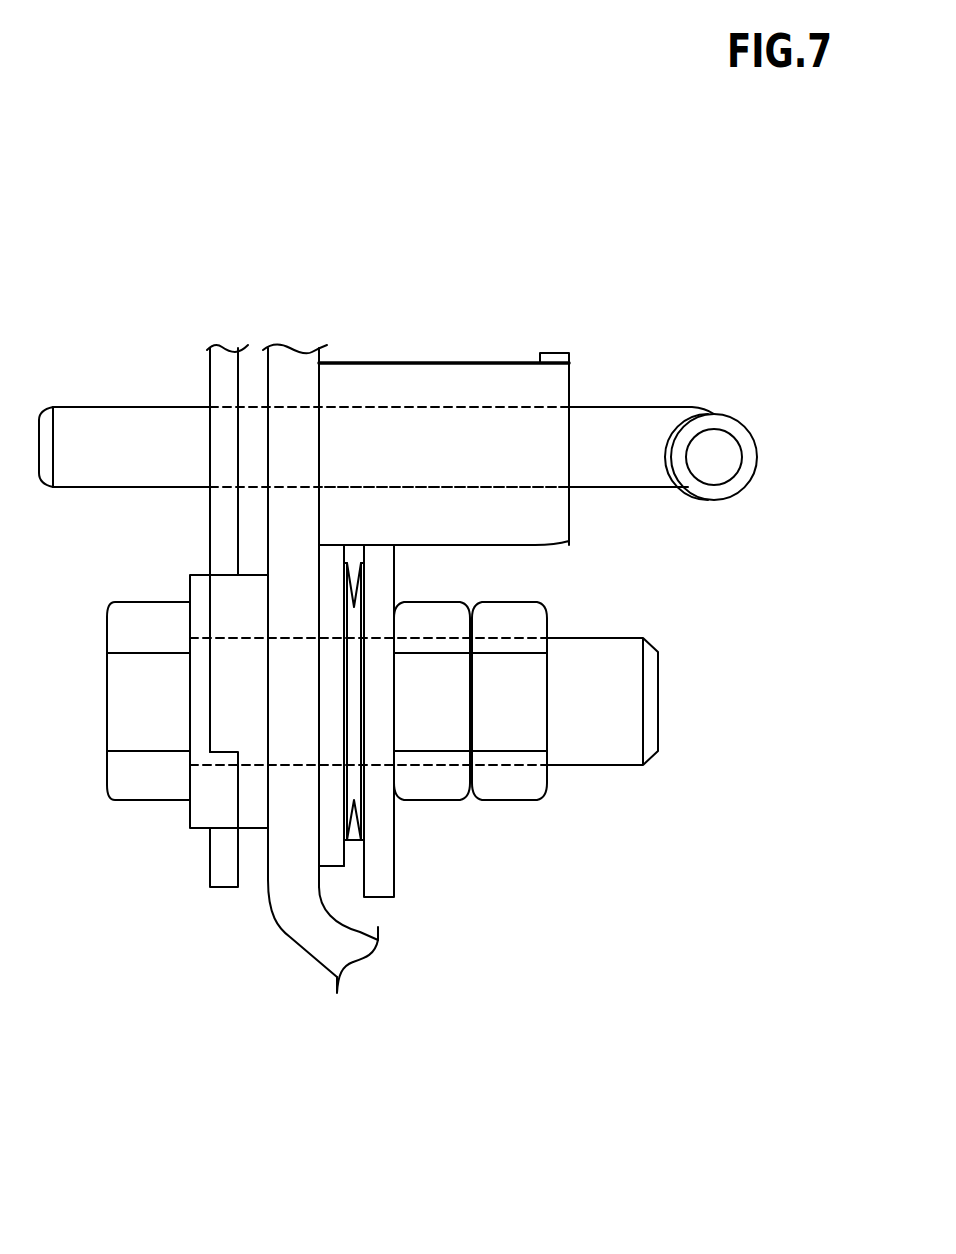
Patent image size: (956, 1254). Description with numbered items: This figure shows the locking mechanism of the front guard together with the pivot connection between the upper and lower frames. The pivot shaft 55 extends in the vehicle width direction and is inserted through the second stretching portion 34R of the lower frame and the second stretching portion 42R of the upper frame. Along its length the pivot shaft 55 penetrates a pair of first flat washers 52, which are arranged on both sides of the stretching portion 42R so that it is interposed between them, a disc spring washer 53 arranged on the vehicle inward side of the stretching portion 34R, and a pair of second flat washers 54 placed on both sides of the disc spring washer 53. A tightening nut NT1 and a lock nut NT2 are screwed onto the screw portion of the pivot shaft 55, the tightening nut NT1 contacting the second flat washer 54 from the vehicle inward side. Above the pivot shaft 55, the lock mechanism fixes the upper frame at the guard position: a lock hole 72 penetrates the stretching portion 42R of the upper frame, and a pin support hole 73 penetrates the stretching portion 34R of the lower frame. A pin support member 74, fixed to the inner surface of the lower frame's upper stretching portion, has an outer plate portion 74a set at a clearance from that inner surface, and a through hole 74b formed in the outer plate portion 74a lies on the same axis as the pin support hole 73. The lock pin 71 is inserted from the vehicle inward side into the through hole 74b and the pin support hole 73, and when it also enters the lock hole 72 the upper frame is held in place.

The lock pin 71 is at (642, 406).
The lock hole 72 is at (231, 403).
The pin support hole 73 is at (296, 403).
The pin support member 74 is at (458, 358).
The outer plate portion 74a is at (569, 356).
The through hole 74b is at (553, 487).
The first flat washer 52 is at (253, 830).
The second stretching portion 42R is at (226, 888).
The second flat washer 54 is at (303, 945).
The disc spring washer 53 is at (355, 840).
The second stretching portion 34R is at (318, 963).
The pivot shaft 55 is at (603, 765).
The tightening nut NT1 is at (430, 800).
The lock nut NT2 is at (505, 800).